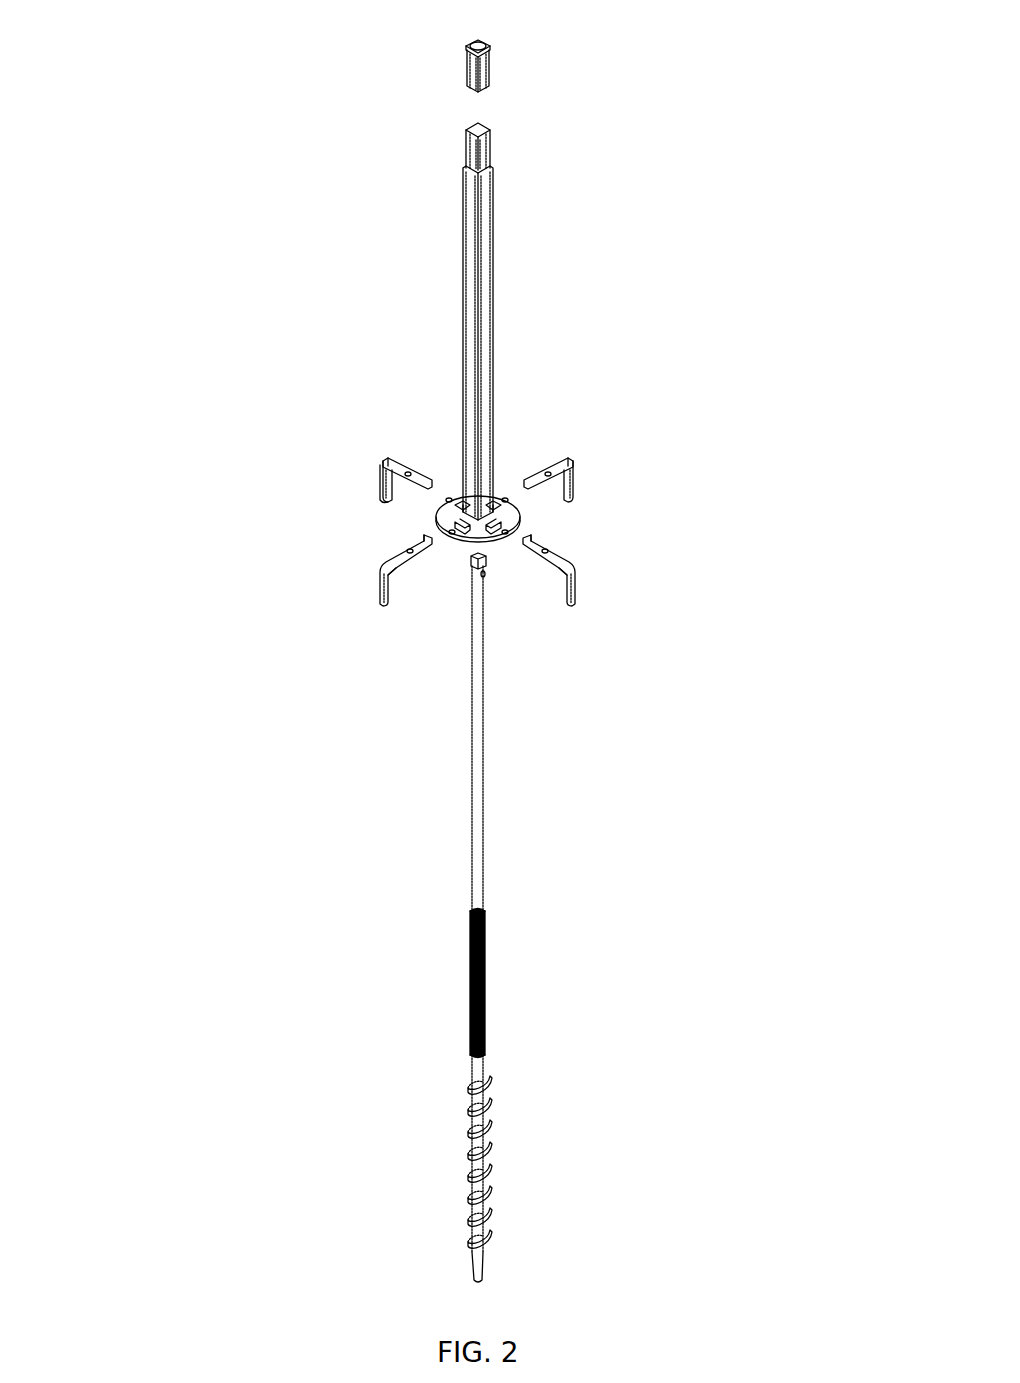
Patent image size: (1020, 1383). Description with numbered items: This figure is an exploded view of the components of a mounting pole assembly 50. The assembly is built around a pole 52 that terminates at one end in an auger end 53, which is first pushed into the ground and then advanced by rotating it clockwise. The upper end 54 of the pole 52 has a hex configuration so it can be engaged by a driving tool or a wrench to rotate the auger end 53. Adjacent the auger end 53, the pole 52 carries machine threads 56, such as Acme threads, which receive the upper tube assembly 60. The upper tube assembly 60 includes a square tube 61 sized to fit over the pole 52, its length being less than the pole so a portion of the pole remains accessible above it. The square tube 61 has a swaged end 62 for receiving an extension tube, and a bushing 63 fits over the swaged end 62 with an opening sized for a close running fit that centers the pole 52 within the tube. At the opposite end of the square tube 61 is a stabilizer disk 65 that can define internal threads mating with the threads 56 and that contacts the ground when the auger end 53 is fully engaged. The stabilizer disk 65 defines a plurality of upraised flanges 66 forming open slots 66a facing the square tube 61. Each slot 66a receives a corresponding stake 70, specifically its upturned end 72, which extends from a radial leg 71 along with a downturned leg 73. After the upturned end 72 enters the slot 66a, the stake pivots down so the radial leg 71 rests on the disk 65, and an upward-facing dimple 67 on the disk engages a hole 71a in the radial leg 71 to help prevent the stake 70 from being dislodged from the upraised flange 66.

The pole assembly 50 is at (385, 726).
The pole 52 is at (483, 748).
The auger end 53 is at (490, 1148).
The upper end 54 is at (485, 562).
The machine threads 56 is at (485, 982).
The upper tube assembly 60 is at (492, 255).
The square tube 61 is at (490, 470).
The swaged end 62 is at (492, 148).
The bushing 63 is at (488, 70).
The stabilizer disk 65 is at (437, 512).
The upraised flanges 66 is at (465, 530).
The open slots 66a is at (520, 520).
The dimple 67 is at (447, 500).
The stake 70 is at (380, 462).
The radial leg 71 is at (560, 462).
The hole 71a is at (420, 545).
The upturned end 72 is at (655, 520).
The downturned leg 73 is at (378, 487).